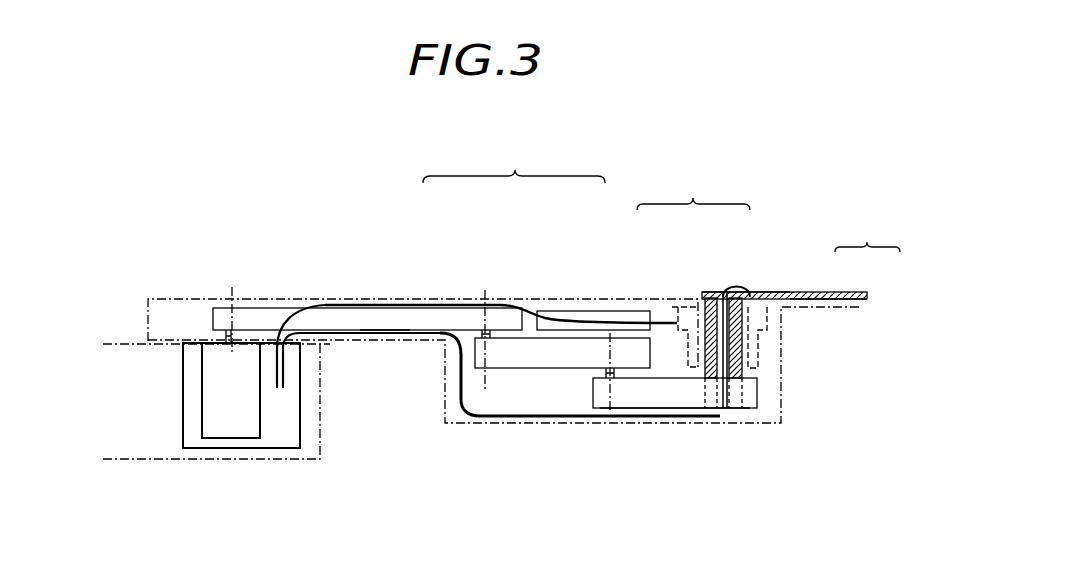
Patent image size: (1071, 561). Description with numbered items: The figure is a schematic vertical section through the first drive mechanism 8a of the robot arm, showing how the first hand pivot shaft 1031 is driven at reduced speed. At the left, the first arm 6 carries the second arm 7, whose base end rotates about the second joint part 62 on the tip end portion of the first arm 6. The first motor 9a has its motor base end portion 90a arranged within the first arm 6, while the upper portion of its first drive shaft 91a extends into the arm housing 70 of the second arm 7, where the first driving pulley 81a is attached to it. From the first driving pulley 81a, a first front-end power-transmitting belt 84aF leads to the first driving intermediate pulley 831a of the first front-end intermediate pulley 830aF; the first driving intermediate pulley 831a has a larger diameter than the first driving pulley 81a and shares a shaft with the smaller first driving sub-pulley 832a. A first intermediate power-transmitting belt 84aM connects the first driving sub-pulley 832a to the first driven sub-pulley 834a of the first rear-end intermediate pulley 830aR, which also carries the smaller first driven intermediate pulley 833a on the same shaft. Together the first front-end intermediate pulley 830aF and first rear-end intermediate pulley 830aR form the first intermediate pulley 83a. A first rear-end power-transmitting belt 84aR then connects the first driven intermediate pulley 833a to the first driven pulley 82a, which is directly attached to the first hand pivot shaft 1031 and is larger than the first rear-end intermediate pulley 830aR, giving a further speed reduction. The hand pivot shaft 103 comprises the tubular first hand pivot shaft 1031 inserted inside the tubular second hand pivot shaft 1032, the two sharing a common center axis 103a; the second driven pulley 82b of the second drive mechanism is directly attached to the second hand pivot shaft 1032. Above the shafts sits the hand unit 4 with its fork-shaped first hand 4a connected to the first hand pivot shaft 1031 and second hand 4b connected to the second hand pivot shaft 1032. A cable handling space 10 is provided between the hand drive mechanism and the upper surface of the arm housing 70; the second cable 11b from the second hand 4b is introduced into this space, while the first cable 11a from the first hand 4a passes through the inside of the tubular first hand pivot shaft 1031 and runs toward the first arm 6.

The second arm 7 is at (288, 262).
The first arm 6 is at (136, 468).
The arm housing 70 is at (345, 307).
The first front-end power-transmitting belt 84aF is at (383, 331).
The first driving pulley 81a is at (255, 314).
The first drive shaft 91a is at (224, 341).
The second joint part 62 is at (314, 400).
The first motor 9a is at (228, 438).
The motor base end portion 90a is at (262, 403).
The cable handling space 10 is at (562, 311).
The first drive mechanism 8a is at (462, 417).
The first cable 11a is at (473, 382).
The first driving intermediate pulley 831a is at (452, 323).
The first front-end intermediate pulley 830aF is at (484, 302).
The first rear-end intermediate pulley 830aR is at (597, 330).
The first intermediate pulley 83a is at (514, 164).
The second cable 11b is at (537, 312).
The first intermediate power-transmitting belt 84aM is at (537, 355).
The first driving sub-pulley 832a is at (498, 343).
The first driven sub-pulley 834a is at (570, 343).
The first driven intermediate pulley 833a is at (629, 384).
The first driven pulley 82a is at (677, 392).
The first rear-end power-transmitting belt 84aR is at (633, 392).
The hand pivot shaft 103 is at (693, 275).
The second hand pivot shaft 1032 is at (683, 296).
The first hand pivot shaft 1031 is at (698, 297).
The center axis 103a is at (723, 293).
The hand unit 4 is at (801, 258).
The first hand 4a is at (847, 292).
The second hand 4b is at (880, 307).
The second driven pulley 82b is at (758, 352).